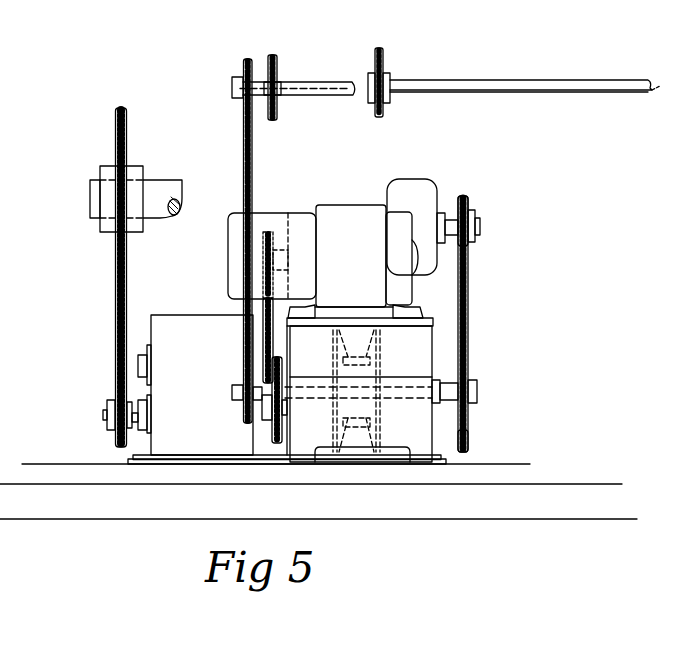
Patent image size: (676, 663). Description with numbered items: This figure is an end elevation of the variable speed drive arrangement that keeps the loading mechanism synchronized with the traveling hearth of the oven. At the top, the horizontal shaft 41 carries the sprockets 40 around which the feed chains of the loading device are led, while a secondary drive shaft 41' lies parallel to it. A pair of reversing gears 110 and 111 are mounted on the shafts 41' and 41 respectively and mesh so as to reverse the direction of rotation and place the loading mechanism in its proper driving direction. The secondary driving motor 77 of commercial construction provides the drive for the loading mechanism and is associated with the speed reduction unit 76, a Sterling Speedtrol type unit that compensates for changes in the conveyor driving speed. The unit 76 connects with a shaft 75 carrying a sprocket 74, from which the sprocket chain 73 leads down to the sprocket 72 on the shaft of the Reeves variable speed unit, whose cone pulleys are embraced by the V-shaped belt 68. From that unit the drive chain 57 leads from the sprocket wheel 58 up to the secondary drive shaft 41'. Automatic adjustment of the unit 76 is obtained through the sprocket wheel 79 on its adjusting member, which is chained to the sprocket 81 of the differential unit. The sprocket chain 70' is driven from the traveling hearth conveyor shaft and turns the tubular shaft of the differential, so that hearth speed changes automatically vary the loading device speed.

The reversing gear 111 is at (272, 55).
The secondary drive shaft 41' is at (299, 63).
The sprocket 40 is at (380, 48).
The horizontal shaft 41 is at (525, 60).
The reversing gear 110 is at (278, 110).
The drive chain 57 is at (252, 153).
The secondary driving motor 77 is at (337, 222).
The speed reduction unit 76 is at (417, 198).
The sprocket wheel 79 is at (268, 232).
The sprocket 74 is at (468, 200).
The shaft 75 is at (480, 228).
The sprocket chain 70' is at (139, 277).
The sprocket chain 73 is at (470, 305).
The sprocket 81 is at (275, 355).
The belt 68 is at (372, 360).
The sprocket wheel 58 is at (243, 420).
The sprocket 72 is at (468, 435).